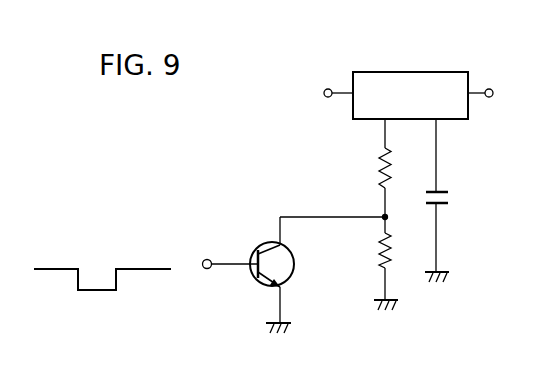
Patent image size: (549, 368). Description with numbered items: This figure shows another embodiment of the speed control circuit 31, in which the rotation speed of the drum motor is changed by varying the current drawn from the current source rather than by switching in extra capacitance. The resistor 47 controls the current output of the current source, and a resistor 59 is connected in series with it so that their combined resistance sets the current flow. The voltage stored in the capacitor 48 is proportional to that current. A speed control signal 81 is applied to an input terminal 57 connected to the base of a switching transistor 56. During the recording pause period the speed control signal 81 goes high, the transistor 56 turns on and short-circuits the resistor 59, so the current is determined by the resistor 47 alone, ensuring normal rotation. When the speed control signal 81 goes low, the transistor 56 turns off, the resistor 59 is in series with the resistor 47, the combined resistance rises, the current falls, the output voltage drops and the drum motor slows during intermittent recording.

The speed control circuit 31 is at (410, 72).
The resistor 47 is at (380, 173).
The capacitor 48 is at (447, 198).
The switching transistor 56 is at (252, 279).
The input terminal 57 is at (205, 258).
The resistor 59 is at (380, 257).
The speed control signal 81 is at (98, 292).